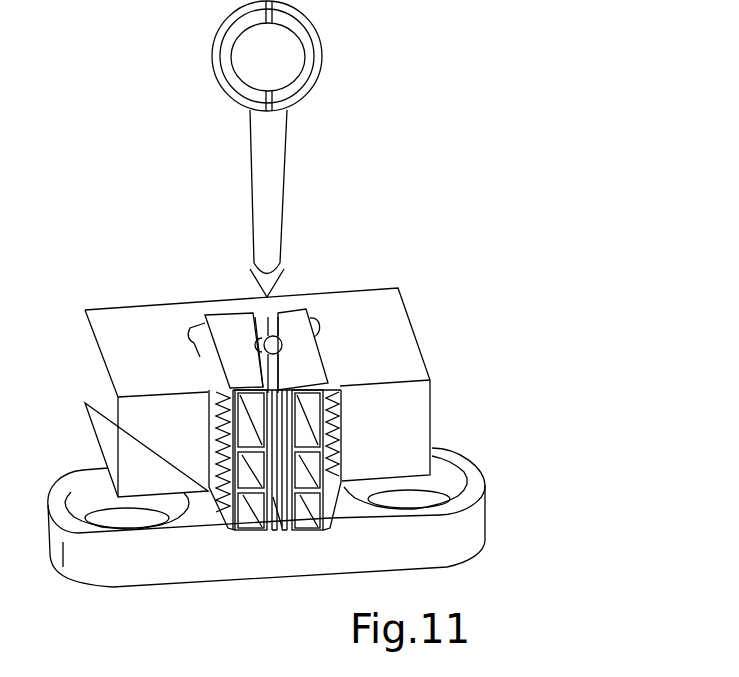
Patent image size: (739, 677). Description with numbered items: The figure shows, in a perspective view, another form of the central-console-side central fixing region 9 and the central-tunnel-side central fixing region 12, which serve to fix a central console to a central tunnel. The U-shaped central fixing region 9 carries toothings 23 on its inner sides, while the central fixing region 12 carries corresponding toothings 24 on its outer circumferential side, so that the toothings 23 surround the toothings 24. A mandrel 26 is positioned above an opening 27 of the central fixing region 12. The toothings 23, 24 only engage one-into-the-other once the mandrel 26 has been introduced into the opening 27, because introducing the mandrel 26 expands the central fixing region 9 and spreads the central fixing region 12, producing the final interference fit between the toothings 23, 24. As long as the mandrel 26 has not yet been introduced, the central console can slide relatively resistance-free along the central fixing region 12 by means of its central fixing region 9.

The mandrel 26 is at (311, 179).
The opening 27 is at (288, 325).
The toothings 23 is at (296, 379).
The central-console-side central fixing region 9 is at (470, 348).
The toothings 24 is at (202, 447).
The central-tunnel-side central fixing region 12 is at (271, 554).